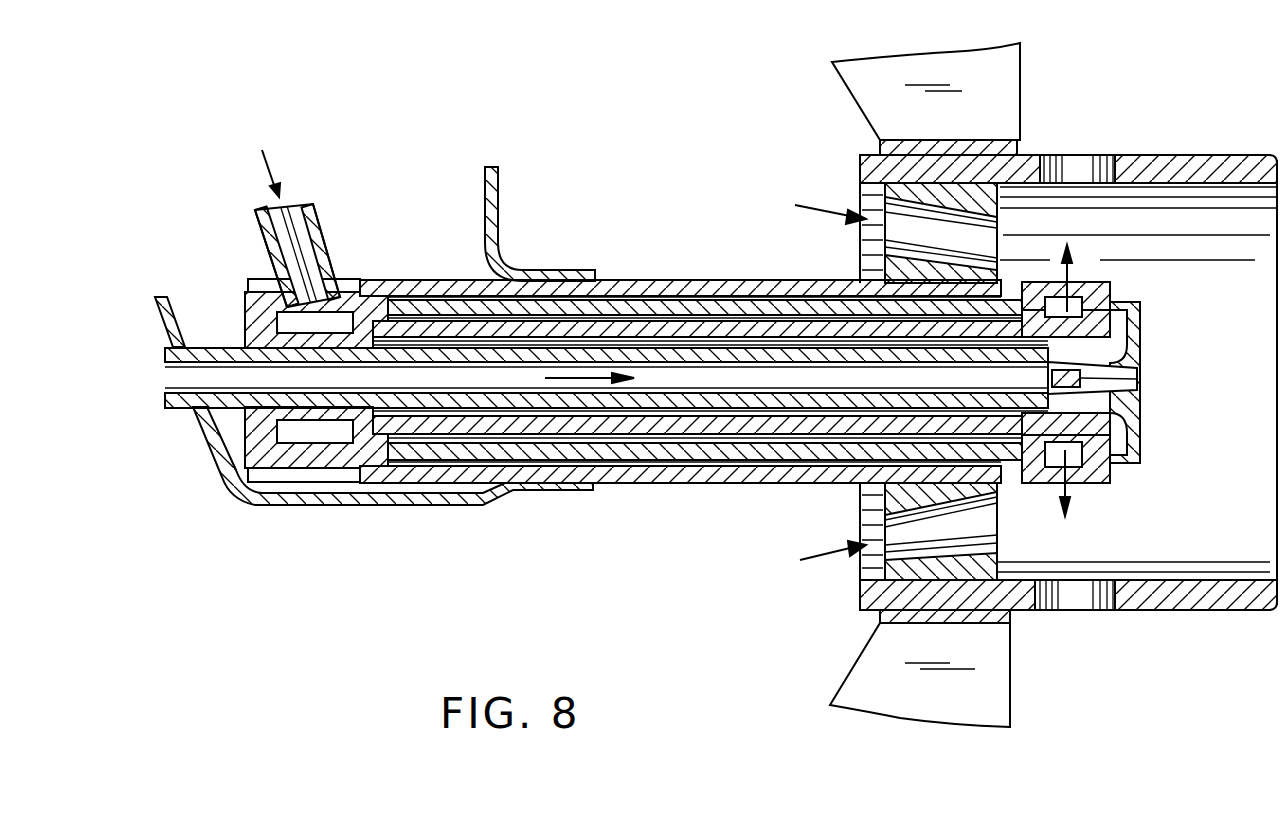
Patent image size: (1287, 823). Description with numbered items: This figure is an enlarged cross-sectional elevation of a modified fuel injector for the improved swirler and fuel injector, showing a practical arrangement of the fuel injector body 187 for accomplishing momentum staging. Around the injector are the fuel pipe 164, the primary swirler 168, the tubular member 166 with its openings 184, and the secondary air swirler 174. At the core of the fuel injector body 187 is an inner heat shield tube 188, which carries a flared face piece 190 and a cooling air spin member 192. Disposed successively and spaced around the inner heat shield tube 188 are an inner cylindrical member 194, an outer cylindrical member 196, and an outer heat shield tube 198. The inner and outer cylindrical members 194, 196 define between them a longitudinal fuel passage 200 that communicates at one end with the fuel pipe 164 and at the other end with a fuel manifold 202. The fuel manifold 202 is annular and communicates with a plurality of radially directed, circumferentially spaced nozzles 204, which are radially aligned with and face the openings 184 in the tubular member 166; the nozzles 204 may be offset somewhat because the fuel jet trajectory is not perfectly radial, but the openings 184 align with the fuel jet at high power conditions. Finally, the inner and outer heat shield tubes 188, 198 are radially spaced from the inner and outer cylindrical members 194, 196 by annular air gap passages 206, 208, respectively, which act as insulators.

The fuel pipe 164 is at (318, 229).
The tubular member 166 is at (1188, 160).
The primary swirler 168 is at (910, 238).
The secondary air swirler 174 is at (870, 92).
The openings 184 is at (1103, 160).
The fuel injector body 187 is at (666, 490).
The inner heat shield tube 188 is at (788, 355).
The flared face piece 190 is at (1142, 320).
The cooling air spin member 192 is at (1083, 387).
The inner cylindrical member 194 is at (682, 330).
The outer cylindrical member 196 is at (747, 310).
The outer heat shield tube 198 is at (621, 280).
The longitudinal fuel passage 200 is at (662, 317).
The fuel manifold 202 is at (1100, 298).
The nozzles 204 is at (1080, 303).
The annular air gap passage 206 is at (498, 342).
The annular air gap passage 208 is at (580, 253).